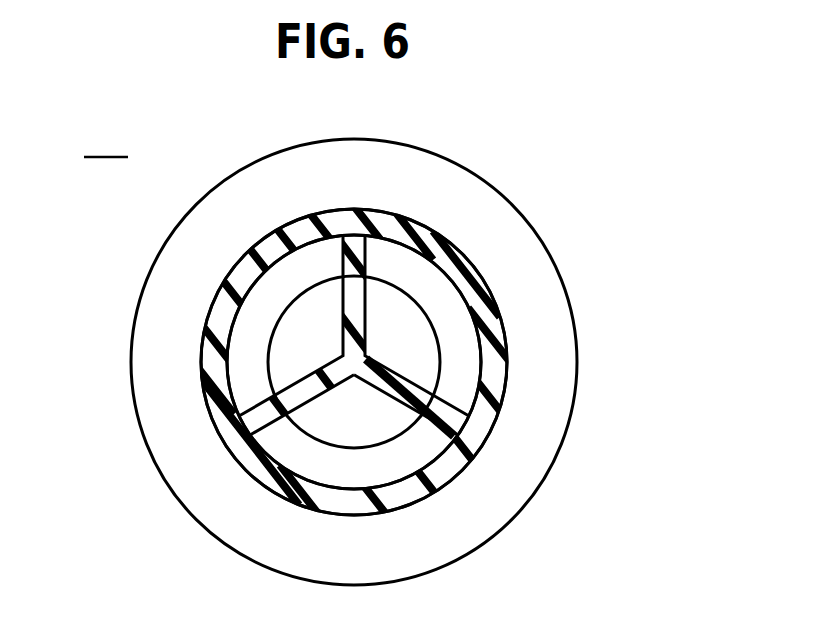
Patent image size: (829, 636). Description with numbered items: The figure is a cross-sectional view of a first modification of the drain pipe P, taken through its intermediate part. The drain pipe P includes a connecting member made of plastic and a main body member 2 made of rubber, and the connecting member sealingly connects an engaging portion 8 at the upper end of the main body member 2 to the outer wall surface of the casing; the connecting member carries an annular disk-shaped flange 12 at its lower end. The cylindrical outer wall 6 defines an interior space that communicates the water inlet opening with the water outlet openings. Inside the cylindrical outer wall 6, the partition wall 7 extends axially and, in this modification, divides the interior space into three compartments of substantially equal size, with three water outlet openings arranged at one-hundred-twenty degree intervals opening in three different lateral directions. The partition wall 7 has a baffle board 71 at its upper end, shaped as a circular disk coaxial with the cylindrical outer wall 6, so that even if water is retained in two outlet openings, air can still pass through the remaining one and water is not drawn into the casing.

The drain pipe P is at (106, 137).
The main body member 2 is at (486, 180).
The engaging portion 8 is at (510, 228).
The cylindrical outer wall 6 is at (505, 338).
The flange 12 is at (462, 328).
The baffle board 71 is at (417, 301).
The partition wall 7 is at (359, 324).